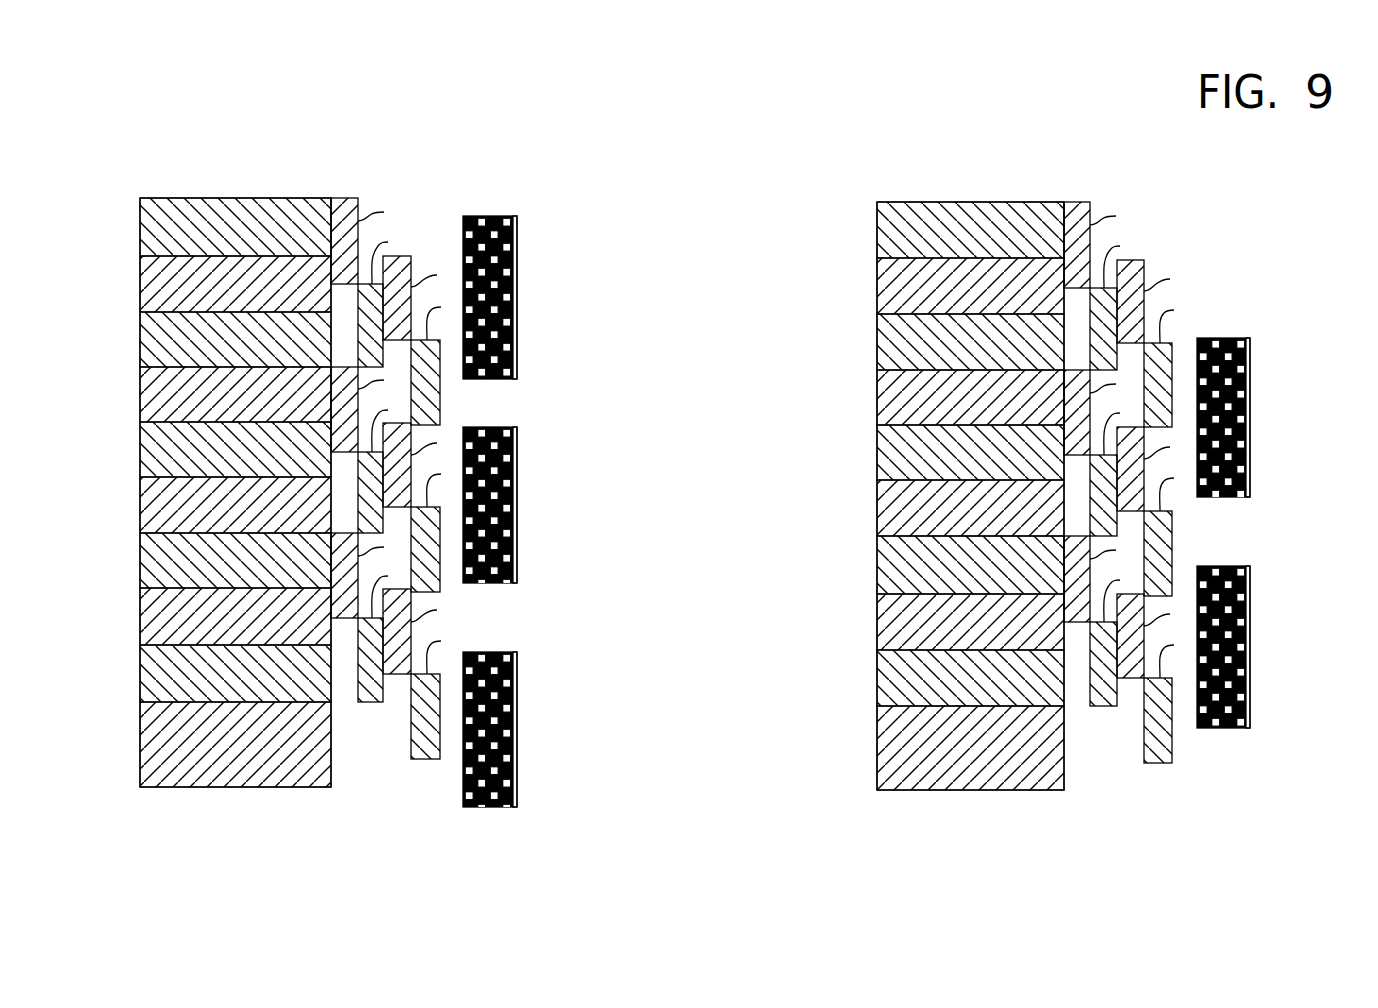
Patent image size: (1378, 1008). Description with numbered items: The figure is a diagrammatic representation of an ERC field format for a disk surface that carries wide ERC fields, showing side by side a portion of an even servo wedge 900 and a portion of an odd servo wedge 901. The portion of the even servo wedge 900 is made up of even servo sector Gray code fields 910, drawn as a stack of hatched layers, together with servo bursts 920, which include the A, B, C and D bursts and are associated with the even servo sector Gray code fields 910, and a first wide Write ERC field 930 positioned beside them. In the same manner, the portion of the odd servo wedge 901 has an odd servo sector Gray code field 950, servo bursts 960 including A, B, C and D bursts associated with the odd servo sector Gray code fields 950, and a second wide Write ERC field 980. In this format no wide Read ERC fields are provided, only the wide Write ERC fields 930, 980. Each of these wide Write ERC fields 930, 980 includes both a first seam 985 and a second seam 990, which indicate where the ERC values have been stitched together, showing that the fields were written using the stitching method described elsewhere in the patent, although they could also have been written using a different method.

The even servo wedge 900 is at (520, 824).
The odd servo wedge 901 is at (1252, 798).
The even servo sector Gray code fields 910 is at (331, 190).
The servo bursts 920 is at (440, 190).
The first wide Write ERC field 930 is at (520, 192).
The odd servo sector Gray code field 950 is at (1064, 192).
The servo bursts 960 is at (1172, 192).
The second wide Write ERC field 980 is at (1252, 193).
The first seam 985 is at (517, 256).
The second seam 990 is at (517, 343).